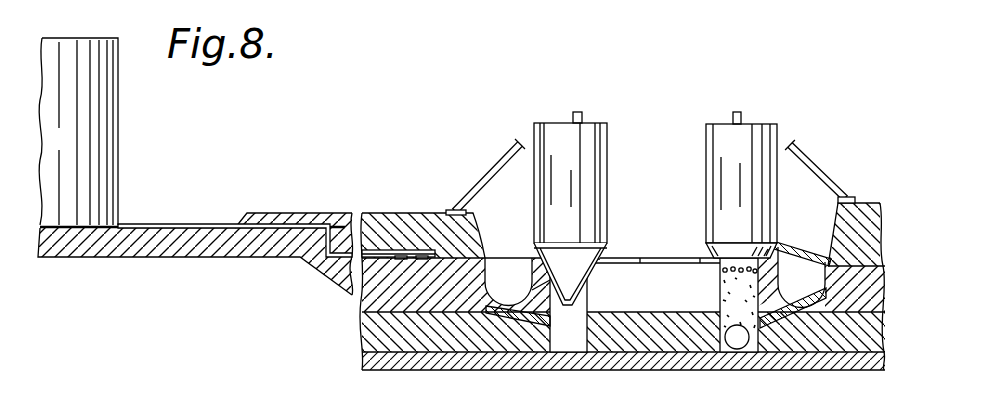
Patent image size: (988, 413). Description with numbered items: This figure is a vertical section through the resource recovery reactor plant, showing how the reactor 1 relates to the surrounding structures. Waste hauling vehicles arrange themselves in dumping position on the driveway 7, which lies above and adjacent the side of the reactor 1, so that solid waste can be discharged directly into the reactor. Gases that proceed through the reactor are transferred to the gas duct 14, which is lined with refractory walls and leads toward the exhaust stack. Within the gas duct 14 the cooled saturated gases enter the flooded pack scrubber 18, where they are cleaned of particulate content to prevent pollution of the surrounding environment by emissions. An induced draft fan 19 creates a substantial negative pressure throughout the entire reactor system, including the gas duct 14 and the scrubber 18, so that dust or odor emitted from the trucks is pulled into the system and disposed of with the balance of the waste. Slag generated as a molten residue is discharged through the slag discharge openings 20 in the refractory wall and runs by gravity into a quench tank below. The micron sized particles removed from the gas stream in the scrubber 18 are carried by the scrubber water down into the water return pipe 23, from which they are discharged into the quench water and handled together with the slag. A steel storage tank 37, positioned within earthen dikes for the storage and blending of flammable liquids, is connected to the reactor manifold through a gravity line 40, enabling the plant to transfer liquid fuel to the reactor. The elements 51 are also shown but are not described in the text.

The steel storage tank 37 is at (120, 107).
The gravity line 40 is at (418, 250).
The reactor 1 is at (495, 258).
The filling container 51 is at (706, 172).
The induced draft fan 19 is at (812, 160).
The driveway 7 is at (866, 203).
The flooded pack scrubber 18 is at (653, 281).
The gas duct 14 is at (582, 345).
The slag discharge opening 20 is at (522, 318).
The water return pipe 23 is at (750, 348).